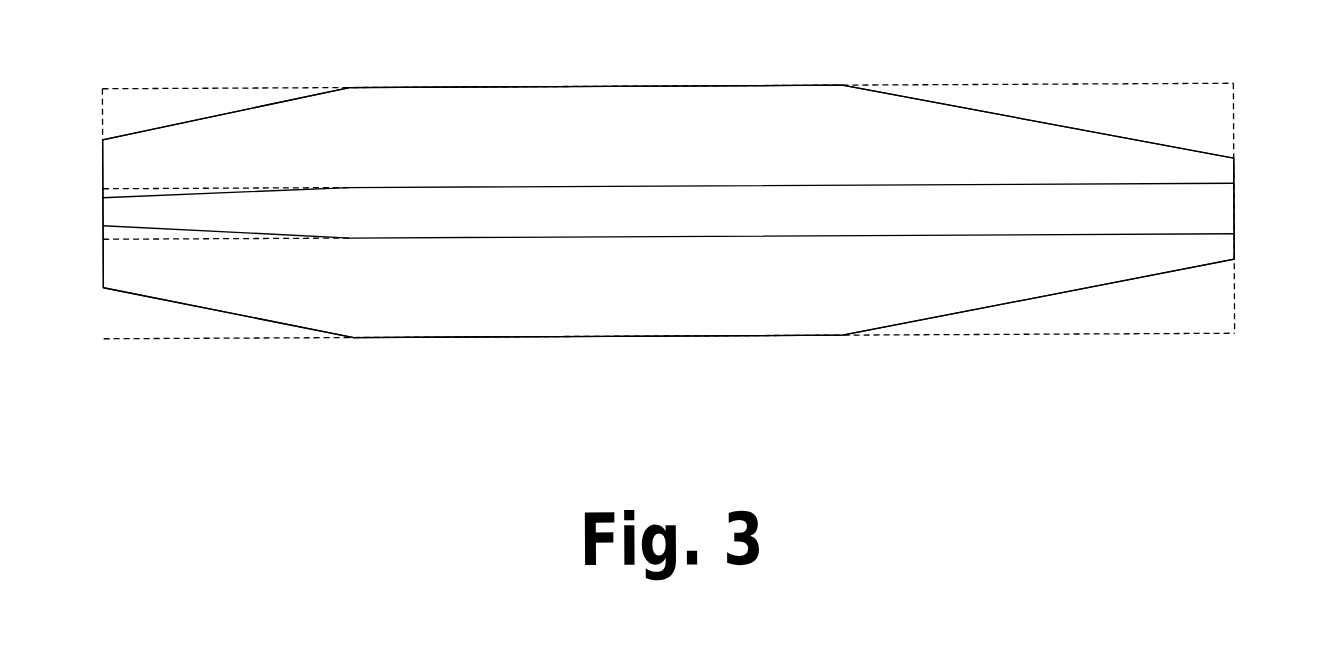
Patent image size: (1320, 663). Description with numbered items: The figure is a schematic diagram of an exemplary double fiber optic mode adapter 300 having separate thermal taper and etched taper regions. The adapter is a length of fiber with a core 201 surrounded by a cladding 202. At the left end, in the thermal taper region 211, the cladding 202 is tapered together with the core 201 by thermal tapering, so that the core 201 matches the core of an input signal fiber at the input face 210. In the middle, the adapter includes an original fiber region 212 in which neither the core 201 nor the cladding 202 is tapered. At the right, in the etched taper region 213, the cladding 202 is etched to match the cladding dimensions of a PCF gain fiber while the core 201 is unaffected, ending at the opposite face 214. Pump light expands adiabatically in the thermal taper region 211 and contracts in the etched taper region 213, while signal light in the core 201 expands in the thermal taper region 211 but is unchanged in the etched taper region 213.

The core 201 is at (668, 211).
The cladding 202 is at (668, 211).
The input face 210 is at (75, 181).
The thermal taper region 211 is at (222, 113).
The original fiber region 212 is at (492, 85).
The etched taper region 213 is at (988, 112).
The second end of tapered fiber 214 is at (1255, 193).
The double fiber optic mode adapter 300 is at (387, 482).